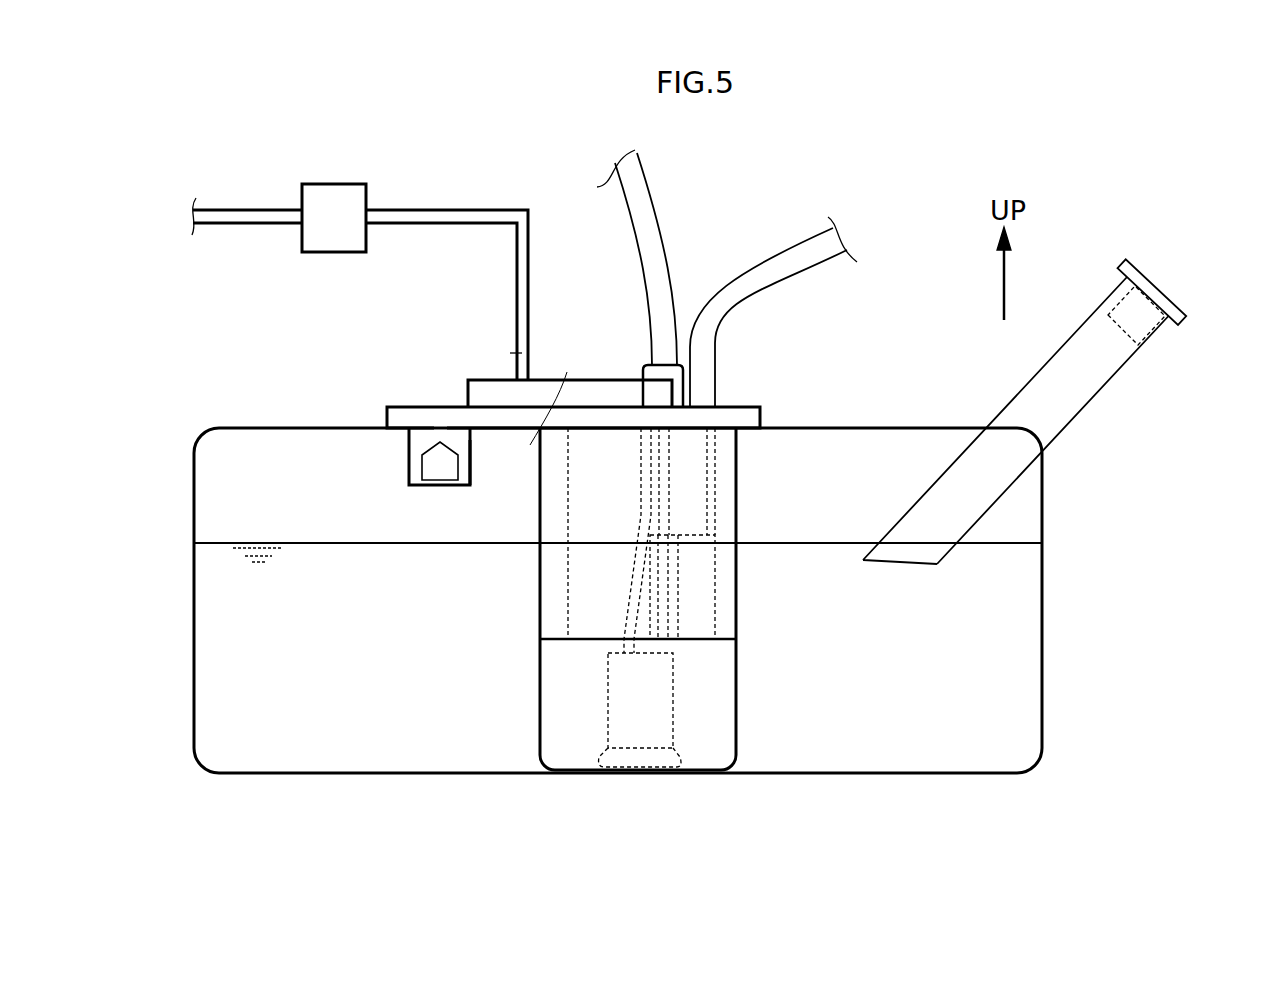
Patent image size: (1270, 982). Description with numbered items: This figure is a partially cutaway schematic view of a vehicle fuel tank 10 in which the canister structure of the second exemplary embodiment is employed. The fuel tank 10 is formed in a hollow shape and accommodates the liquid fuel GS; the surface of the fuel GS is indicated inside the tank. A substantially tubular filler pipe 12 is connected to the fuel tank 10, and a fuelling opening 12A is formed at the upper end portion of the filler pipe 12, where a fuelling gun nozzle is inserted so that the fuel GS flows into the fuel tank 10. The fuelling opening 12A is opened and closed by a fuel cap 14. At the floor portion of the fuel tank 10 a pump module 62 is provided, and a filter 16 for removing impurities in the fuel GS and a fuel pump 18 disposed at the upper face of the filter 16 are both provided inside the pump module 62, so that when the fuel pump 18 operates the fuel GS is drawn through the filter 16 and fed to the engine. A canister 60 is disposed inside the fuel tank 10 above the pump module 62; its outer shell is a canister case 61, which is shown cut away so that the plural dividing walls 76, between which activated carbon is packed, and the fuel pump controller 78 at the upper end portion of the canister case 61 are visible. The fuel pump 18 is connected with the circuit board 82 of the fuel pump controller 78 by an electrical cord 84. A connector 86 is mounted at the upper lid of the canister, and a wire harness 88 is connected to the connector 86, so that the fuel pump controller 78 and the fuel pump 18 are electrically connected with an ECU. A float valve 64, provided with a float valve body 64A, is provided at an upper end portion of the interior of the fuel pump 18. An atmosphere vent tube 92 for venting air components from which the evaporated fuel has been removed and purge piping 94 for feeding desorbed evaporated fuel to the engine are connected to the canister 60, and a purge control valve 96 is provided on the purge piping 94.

The fuel tank 10 is at (1045, 633).
The fuel GS is at (965, 760).
The filler pipe 12 is at (1078, 418).
The fuel cap 14 is at (1127, 275).
The fuelling opening 12A is at (1165, 305).
The canister 60 is at (657, 419).
The canister case 61 is at (738, 460).
The pump module 62 is at (738, 660).
The float valve 64 is at (409, 455).
The float valve body 64A is at (472, 465).
The dividing walls 76 is at (682, 580).
The fuel pump controller 78 is at (720, 492).
The circuit board 82 is at (705, 522).
The electrical cord 84 is at (661, 617).
The connector 86 is at (643, 367).
The wire harness 88 is at (653, 202).
The atmosphere vent tube 92 is at (807, 240).
The purge piping 94 is at (428, 210).
The purge control valve 96 is at (325, 184).
The fuel pump 18 is at (674, 713).
The filter 16 is at (682, 762).